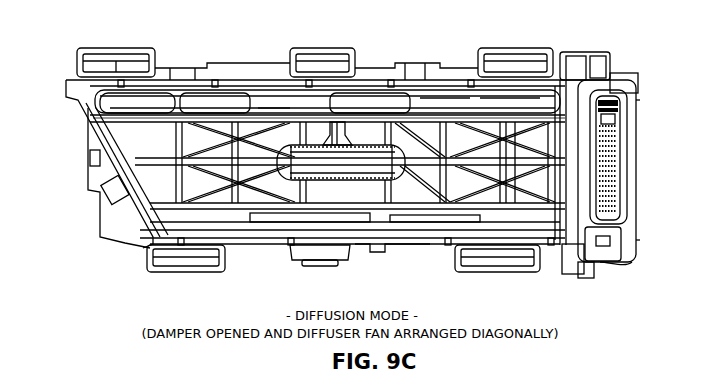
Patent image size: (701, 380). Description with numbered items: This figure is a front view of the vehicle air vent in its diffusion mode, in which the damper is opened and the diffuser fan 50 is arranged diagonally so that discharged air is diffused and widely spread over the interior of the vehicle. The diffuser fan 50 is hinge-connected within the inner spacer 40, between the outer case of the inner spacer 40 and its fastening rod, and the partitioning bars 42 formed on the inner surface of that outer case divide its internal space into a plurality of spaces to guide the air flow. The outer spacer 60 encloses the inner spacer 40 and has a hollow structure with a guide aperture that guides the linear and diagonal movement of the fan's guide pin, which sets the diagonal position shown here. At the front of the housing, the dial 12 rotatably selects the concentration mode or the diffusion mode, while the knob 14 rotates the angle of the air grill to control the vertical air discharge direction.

The dial 12 is at (607, 176).
The knob 14 is at (362, 172).
The inner spacer 40 is at (416, 126).
The partitioning bar 42 is at (436, 140).
The diffuser fan 50 is at (465, 132).
The outer spacer 60 is at (224, 84).